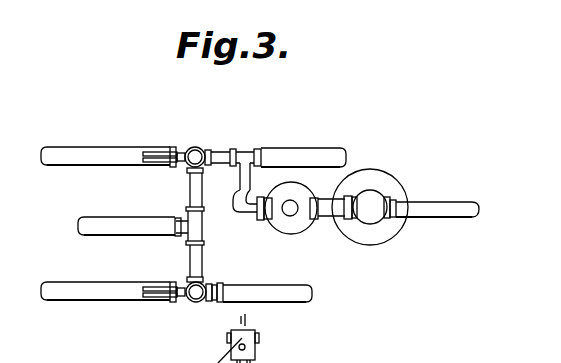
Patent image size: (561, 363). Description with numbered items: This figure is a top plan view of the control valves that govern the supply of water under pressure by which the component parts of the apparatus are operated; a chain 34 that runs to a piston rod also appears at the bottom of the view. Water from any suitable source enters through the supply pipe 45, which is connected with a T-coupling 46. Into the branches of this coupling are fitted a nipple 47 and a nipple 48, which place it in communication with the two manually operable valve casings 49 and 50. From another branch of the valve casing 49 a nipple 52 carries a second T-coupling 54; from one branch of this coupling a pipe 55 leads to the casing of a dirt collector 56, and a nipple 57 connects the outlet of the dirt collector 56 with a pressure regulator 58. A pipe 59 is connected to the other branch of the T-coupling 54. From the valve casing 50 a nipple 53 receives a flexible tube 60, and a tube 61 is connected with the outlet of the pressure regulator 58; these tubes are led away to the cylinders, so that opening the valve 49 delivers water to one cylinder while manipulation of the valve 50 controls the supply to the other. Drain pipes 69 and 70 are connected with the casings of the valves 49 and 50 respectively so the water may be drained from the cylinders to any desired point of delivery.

The chain 34 is at (248, 320).
The supply pipe 45 is at (136, 224).
The T-coupling 46 is at (197, 229).
The nipple 47 is at (189, 192).
The nipple 48 is at (191, 260).
The valve casing 49 is at (195, 146).
The valve casing 50 is at (196, 303).
The nipple 52 is at (226, 150).
The nipple 53 is at (218, 286).
The T-coupling 54 is at (252, 150).
The pipe 55 is at (251, 182).
The dirt collector 56 is at (289, 222).
The nipple 57 is at (338, 222).
The pressure regulator 58 is at (371, 197).
The pipe 59 is at (308, 150).
The flexible tube 60 is at (303, 293).
The tube 61 is at (452, 209).
The drain pipe 69 is at (85, 152).
The drain pipe 70 is at (75, 288).